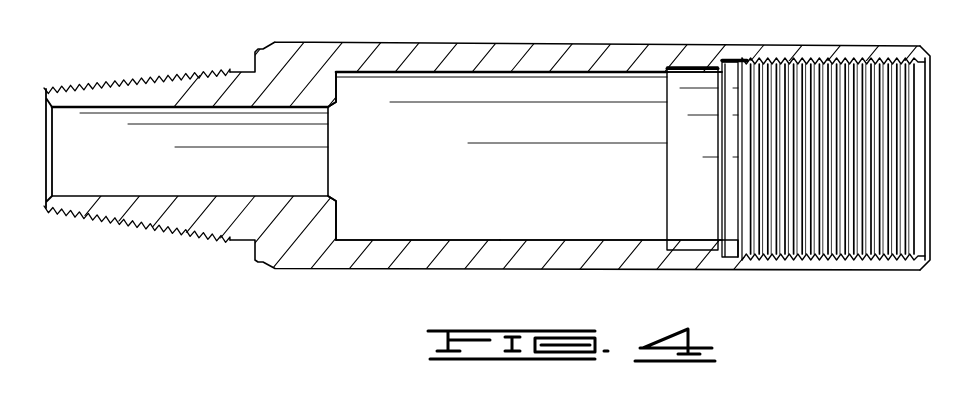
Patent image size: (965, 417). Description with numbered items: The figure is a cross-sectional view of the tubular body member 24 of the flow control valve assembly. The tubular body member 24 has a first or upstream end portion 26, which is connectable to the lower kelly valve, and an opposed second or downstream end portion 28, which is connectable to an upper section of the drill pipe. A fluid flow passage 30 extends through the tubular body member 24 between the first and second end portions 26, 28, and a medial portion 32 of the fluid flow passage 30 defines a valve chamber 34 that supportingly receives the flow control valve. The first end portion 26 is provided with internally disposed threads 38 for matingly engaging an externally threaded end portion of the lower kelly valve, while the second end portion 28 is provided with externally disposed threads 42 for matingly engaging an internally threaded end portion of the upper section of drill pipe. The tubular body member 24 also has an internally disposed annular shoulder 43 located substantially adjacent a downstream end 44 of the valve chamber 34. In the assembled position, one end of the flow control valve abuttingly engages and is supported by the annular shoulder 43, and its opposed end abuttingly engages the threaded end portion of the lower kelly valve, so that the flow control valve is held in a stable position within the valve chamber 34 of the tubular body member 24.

The tubular body member 24 is at (530, 44).
The first or upstream end portion 26 is at (890, 47).
The second or downstream end portion 28 is at (101, 86).
The externally disposed threads 42 is at (118, 216).
The downstream end of the valve chamber 44 is at (380, 78).
The internally disposed annular shoulder 43 is at (338, 80).
The valve chamber 34 is at (502, 170).
The fluid flow passage 30 is at (476, 203).
The medial portion 32 is at (597, 203).
The internally disposed threads 38 is at (862, 238).